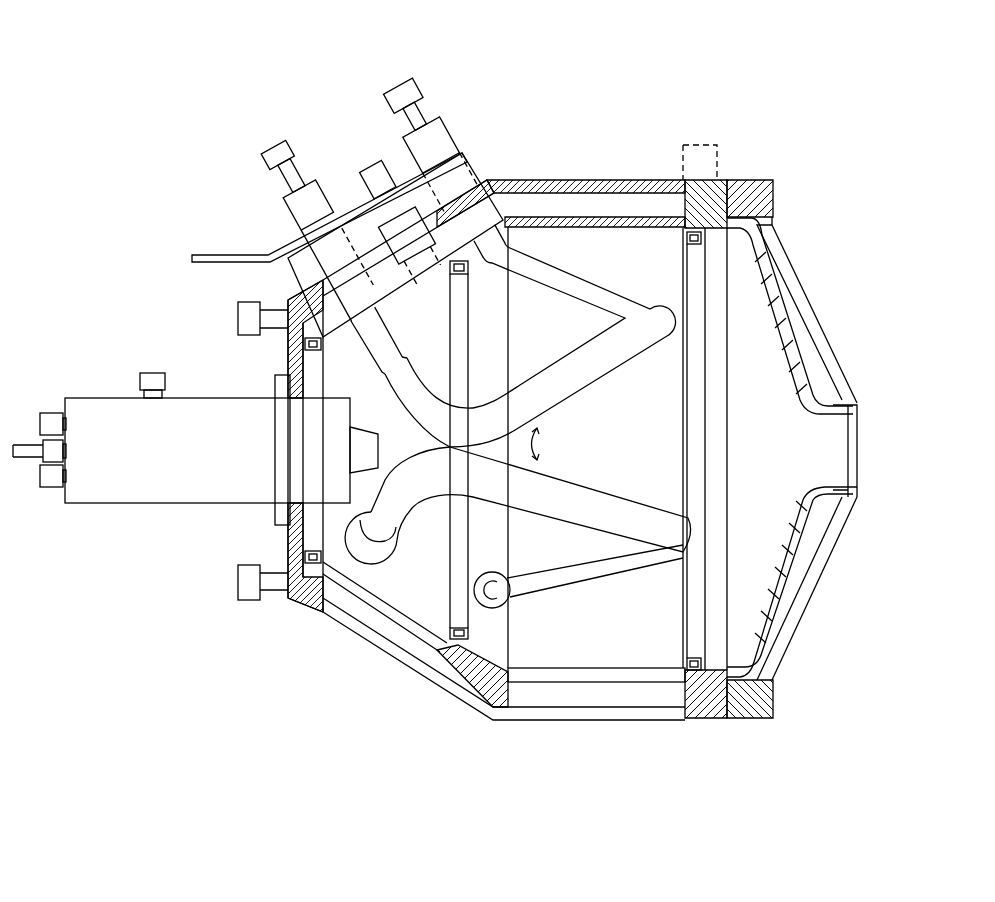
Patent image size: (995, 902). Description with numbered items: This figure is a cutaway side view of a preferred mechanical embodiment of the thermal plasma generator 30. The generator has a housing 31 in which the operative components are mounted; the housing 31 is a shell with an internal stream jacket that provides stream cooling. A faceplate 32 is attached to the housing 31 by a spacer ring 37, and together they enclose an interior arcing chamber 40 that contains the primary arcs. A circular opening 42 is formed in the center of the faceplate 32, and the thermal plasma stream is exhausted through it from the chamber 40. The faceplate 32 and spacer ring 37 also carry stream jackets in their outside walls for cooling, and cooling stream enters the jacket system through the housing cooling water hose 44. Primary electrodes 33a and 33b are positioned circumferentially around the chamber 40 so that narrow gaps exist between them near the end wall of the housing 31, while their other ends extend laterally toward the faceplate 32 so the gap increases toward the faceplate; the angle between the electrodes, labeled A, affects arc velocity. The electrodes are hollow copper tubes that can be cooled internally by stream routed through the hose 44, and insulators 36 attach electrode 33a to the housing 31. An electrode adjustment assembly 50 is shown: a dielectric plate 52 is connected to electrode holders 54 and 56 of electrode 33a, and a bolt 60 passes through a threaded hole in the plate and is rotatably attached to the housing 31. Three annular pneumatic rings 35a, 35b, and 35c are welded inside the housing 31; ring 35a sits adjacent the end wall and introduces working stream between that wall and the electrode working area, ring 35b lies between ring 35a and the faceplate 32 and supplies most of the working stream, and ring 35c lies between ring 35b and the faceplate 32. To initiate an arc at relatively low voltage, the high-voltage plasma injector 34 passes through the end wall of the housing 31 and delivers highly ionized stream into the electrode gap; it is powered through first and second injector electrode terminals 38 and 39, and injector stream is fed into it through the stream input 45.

The thermal plasma generator 30 is at (98, 88).
The housing 31 is at (358, 642).
The faceplate 32 is at (813, 313).
The primary electrode 33a is at (548, 262).
The primary electrode 33b is at (565, 522).
The injector 34 is at (97, 417).
The pneumatic ring 35a is at (312, 537).
The pneumatic ring 35b is at (485, 535).
The pneumatic ring 35c is at (730, 520).
The insulators 36 is at (313, 262).
The spacer ring 37 is at (613, 253).
The injector electrode terminal 38 is at (37, 477).
The injector electrode terminal 39 is at (38, 423).
The arcing chamber 40 is at (633, 458).
The circular opening 42 is at (862, 450).
The housing cooling water hose 44 is at (237, 578).
The stream input 45 is at (148, 370).
The electrode adjustment assembly 50 is at (443, 133).
The dielectric plate 52 is at (460, 157).
The electrode holder 54 is at (263, 151).
The electrode holder 56 is at (400, 80).
The bolt 60 is at (368, 170).